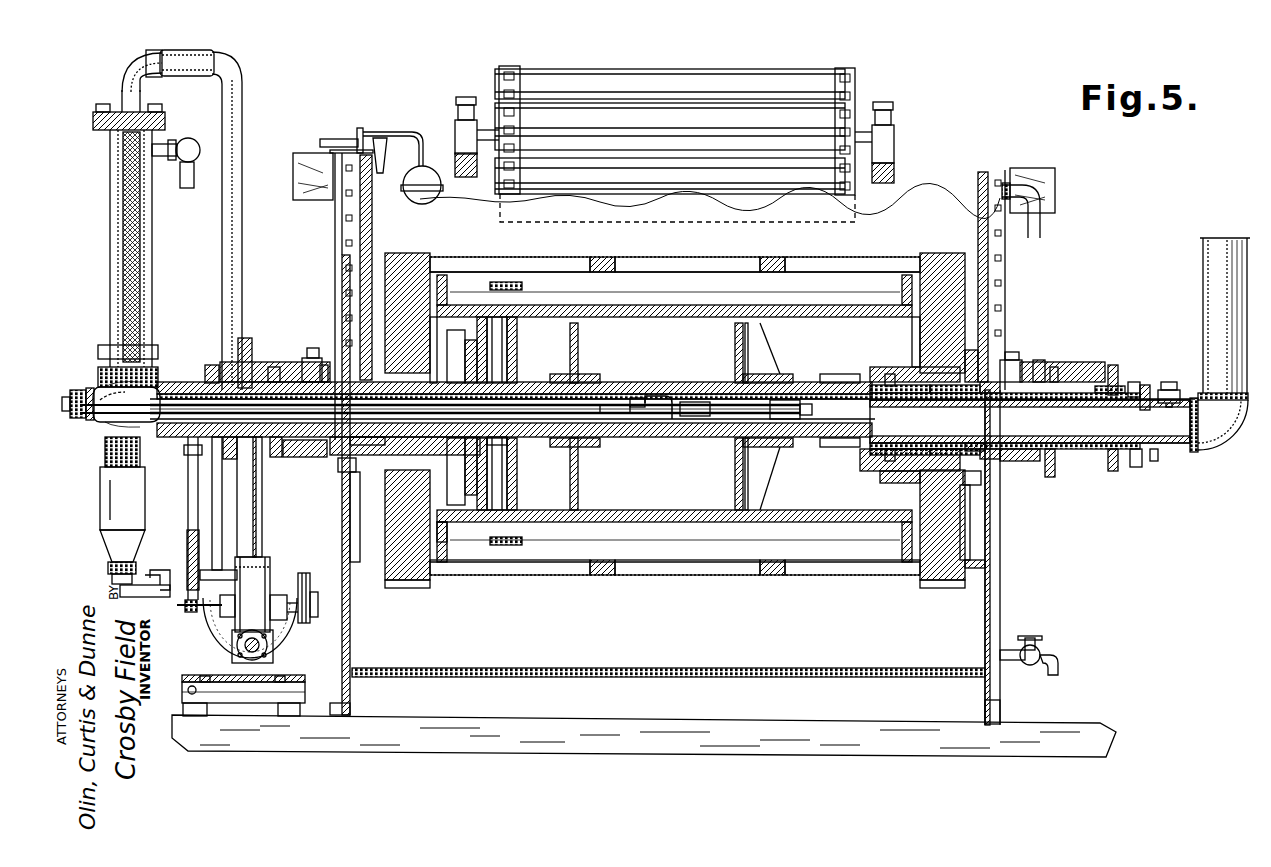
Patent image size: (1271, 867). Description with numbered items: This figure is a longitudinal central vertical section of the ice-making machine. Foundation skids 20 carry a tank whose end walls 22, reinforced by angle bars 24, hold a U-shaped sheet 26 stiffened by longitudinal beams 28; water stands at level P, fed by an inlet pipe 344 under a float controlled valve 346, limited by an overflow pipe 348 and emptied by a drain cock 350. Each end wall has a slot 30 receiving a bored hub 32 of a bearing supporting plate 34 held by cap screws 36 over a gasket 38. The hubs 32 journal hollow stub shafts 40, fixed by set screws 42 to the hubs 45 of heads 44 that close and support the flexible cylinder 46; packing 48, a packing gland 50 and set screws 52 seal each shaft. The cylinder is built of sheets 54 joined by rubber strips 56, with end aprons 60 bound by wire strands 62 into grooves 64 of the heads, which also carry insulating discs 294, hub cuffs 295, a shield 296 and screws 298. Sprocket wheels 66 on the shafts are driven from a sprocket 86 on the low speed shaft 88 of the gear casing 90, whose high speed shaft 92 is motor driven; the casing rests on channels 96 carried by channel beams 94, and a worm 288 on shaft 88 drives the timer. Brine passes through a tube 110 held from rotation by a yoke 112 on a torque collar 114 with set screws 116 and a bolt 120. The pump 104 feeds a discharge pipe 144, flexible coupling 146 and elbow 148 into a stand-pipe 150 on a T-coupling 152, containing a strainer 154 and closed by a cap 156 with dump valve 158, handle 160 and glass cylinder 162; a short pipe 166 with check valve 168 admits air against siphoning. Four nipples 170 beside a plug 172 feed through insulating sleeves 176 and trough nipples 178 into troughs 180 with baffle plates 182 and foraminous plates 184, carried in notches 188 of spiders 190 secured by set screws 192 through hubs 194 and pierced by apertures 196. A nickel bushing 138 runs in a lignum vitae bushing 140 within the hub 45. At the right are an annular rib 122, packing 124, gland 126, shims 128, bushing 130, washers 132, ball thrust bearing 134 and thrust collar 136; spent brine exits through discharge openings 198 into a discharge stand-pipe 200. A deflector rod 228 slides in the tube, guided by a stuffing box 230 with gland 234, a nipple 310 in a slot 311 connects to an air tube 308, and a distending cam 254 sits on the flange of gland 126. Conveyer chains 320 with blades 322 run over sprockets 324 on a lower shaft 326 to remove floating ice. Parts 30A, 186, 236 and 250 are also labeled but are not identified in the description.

The base board 20 is at (690, 742).
The upright post 22 is at (352, 690).
The post foot 24 is at (1002, 605).
The lower tie tube 26 is at (700, 677).
The right end panel 28 is at (1035, 168).
The frame member 30 is at (335, 248).
The pipe sleeve 30A is at (945, 407).
The bolt 32 is at (318, 367).
The end plate 34 is at (360, 270).
The bolts 36 is at (346, 215).
The bracket rod 38 is at (352, 500).
The flange 40 is at (285, 362).
The end flange 42 is at (900, 367).
The end wall 44 is at (342, 300).
The inner wall 45 is at (477, 355).
The outer shell 46 is at (700, 262).
The packing gland 48 is at (990, 407).
The bolt 50 is at (312, 358).
The bolt 52 is at (338, 470).
The shell plate 54 is at (830, 257).
The shell joint 56 is at (600, 257).
The end block 60 is at (420, 242).
The end block base 62 is at (960, 590).
The end block flange 64 is at (985, 566).
The valve bolt 66 is at (276, 367).
The belt pulley 86 is at (314, 592).
The pulley 88 is at (318, 630).
The gear housing 90 is at (255, 557).
The motor 92 is at (258, 610).
The foot 94 is at (195, 716).
The motor base 96 is at (295, 692).
The housing 104 is at (215, 640).
The main pipe 110 is at (165, 426).
The rod end 112 is at (188, 497).
The shaft 114 is at (190, 392).
The rod 116 is at (188, 480).
The base plate 120 is at (182, 688).
The gland 122 is at (1020, 461).
The packing 124 is at (1050, 405).
The flange 126 is at (1113, 365).
The ring 128 is at (1105, 386).
The pipe section 130 is at (1090, 436).
The flange 132 is at (1125, 467).
The collar 134 is at (1145, 385).
The elbow 136 is at (1172, 382).
The collar 138 is at (890, 449).
The gland nut 140 is at (855, 367).
The pipe 144 is at (242, 100).
The pipe coupling 146 is at (195, 50).
The elbow 148 is at (125, 70).
The column 150 is at (110, 205).
The column base 152 is at (160, 345).
The filter core 154 is at (123, 258).
The funnel 156 is at (108, 545).
The valve 158 is at (110, 578).
The valve handle 160 is at (155, 597).
The container 162 is at (100, 495).
The drain 166 is at (182, 172).
The valve 168 is at (194, 140).
The tube 170 is at (500, 360).
The tube end 172 is at (520, 448).
The tube wall 176 is at (517, 345).
The tube bore 178 is at (517, 330).
The inner liner 180 is at (740, 305).
The spacer 182 is at (522, 288).
The space 184 is at (630, 272).
The liner plate 186 is at (840, 305).
The partition 188 is at (578, 330).
The support 190 is at (575, 374).
The brace 192 is at (780, 360).
The brace 194 is at (800, 462).
The partition 196 is at (743, 485).
The bearing block 198 is at (830, 374).
The outlet pipe 200 is at (1203, 278).
The shaft end 228 is at (85, 417).
The valve body 230 is at (95, 420).
The flange 234 is at (90, 388).
The cap 236 is at (58, 445).
The clamp 250 is at (184, 452).
The sleeve 254 is at (262, 470).
The coupling 288 is at (190, 612).
The wall 294 is at (912, 335).
The chamber 295 is at (463, 354).
The chamber 296 is at (455, 495).
The wall 298 is at (455, 535).
The pipe 308 is at (655, 396).
The coupling 310 is at (690, 402).
The coupling 311 is at (648, 385).
The sprocket chain 320 is at (499, 70).
The roller 322 is at (640, 69).
The roller 324 is at (830, 120).
The roller 326 is at (655, 135).
The bar 344 is at (338, 139).
The float 346 is at (390, 142).
The elbow pipe 348 is at (1040, 193).
The drain faucet 350 is at (1035, 647).
The fabric P is at (905, 200).